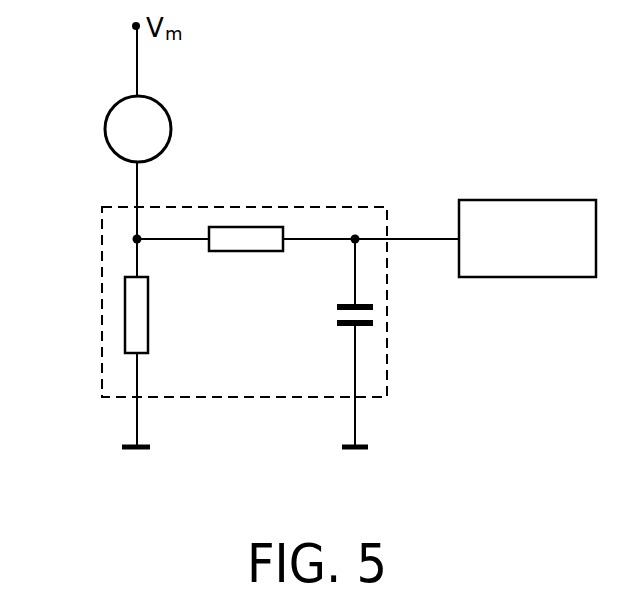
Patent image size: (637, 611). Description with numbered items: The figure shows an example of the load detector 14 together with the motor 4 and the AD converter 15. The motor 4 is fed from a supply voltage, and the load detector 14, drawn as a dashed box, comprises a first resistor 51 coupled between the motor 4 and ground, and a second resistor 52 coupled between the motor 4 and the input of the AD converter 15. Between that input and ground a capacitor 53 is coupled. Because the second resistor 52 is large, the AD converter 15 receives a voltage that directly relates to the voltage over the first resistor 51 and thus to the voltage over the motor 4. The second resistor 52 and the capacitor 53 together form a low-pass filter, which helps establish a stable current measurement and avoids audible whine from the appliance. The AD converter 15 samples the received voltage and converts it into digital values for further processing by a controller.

The motor 4 is at (105, 128).
The load detector 14 is at (102, 236).
The AD converter 15 is at (527, 200).
The first resistor 51 is at (125, 315).
The second resistor 52 is at (245, 227).
The capacitor 53 is at (373, 315).